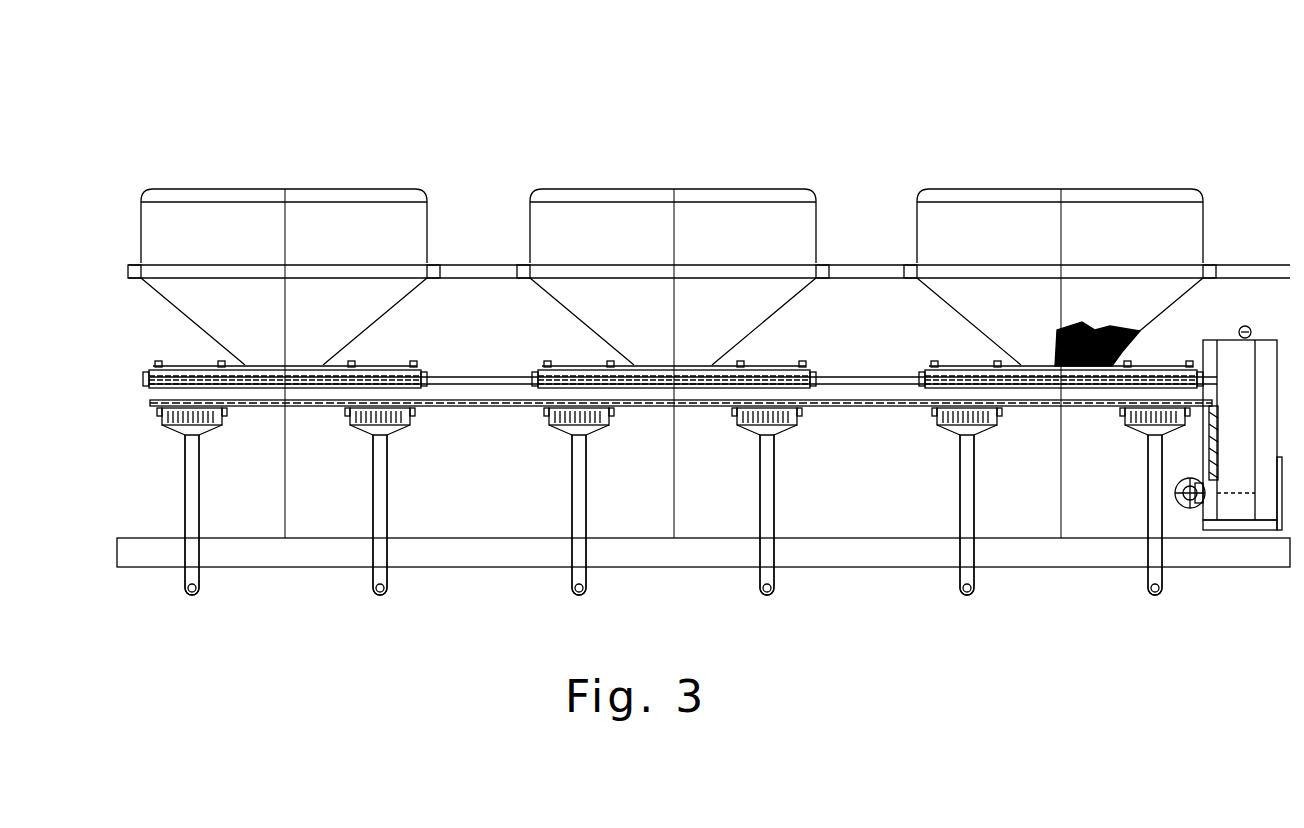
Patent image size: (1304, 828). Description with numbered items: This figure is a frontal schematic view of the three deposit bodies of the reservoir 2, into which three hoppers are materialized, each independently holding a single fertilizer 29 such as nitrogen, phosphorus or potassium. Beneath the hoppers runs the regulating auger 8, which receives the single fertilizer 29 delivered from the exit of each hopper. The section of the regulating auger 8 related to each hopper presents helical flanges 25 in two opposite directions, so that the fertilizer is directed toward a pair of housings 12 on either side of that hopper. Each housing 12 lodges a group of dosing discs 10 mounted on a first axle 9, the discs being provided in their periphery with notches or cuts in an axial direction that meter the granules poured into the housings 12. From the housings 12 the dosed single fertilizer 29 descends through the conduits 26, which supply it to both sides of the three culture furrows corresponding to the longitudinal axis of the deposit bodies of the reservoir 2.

The reservoir 2 is at (237, 188).
The helical flanges 25 is at (575, 373).
The single fertilizer 29 is at (1088, 325).
The regulating auger 8 is at (277, 378).
The dosing discs 10 is at (190, 408).
The first axle 9 is at (322, 403).
The housings 12 is at (163, 425).
The conduits 26 is at (378, 515).